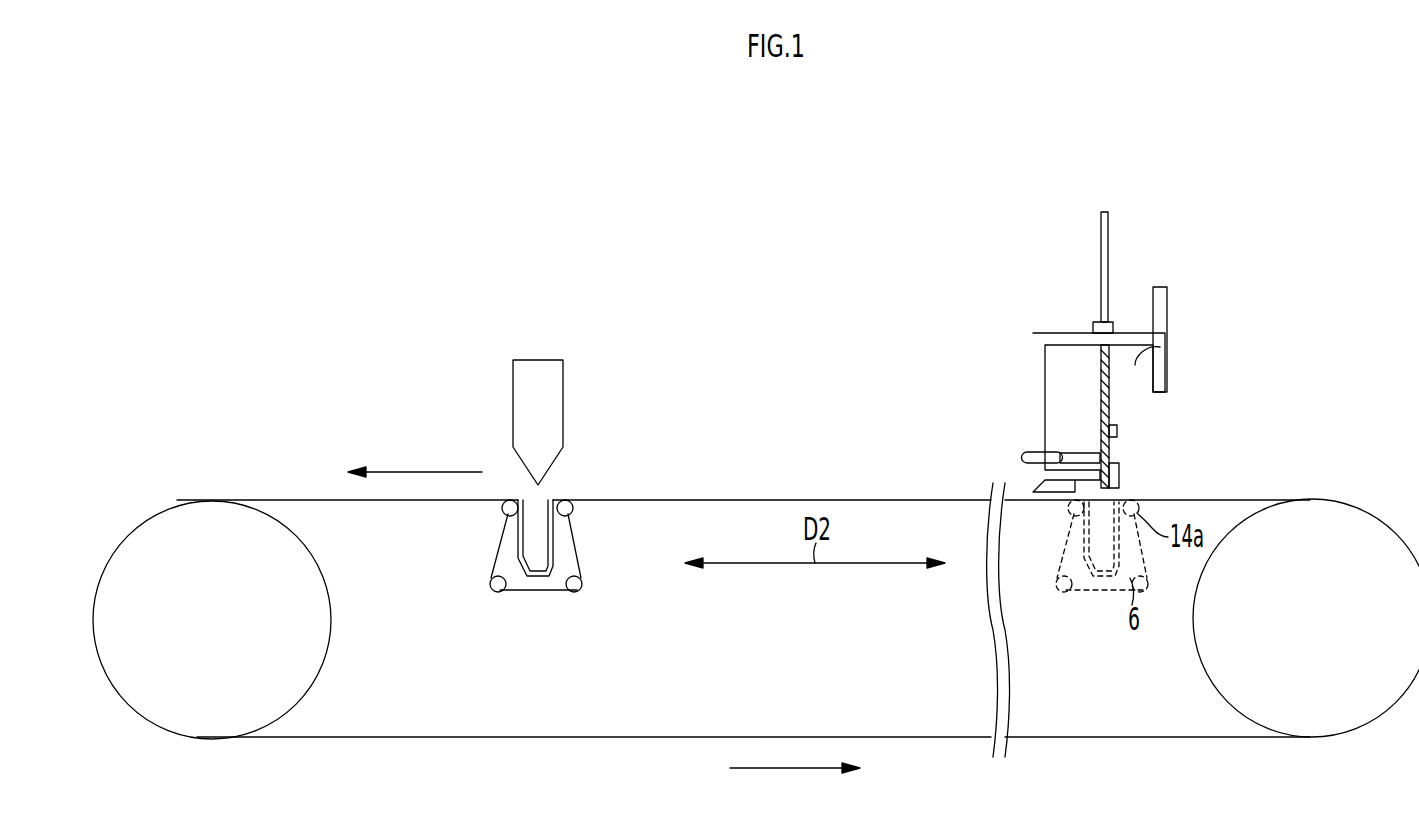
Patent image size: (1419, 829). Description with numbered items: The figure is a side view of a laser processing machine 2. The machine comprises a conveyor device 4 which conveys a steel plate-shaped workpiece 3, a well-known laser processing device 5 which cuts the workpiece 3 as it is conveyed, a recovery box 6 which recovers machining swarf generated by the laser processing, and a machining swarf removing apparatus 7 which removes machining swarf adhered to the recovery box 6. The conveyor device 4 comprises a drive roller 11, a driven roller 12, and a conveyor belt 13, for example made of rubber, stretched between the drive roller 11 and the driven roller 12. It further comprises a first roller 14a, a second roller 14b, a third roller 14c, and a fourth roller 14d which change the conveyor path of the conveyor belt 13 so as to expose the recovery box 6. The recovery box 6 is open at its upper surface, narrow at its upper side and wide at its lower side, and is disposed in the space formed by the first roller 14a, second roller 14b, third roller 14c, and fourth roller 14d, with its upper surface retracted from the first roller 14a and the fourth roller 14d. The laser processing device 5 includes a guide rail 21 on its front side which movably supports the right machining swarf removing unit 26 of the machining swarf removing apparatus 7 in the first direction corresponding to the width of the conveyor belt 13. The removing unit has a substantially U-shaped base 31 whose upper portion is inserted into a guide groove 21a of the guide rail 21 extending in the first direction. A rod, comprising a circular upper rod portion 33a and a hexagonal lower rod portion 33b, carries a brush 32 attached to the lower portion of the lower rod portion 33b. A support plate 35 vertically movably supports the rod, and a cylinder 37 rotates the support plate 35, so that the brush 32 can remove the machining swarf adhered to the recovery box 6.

The laser processing machine 2 is at (290, 250).
The workpiece 3 is at (594, 500).
The conveyor device 4 is at (113, 524).
The laser processing device 5 is at (540, 360).
The recovery box 6 is at (538, 569).
The machining swarf removing apparatus 7 is at (1019, 274).
The drive roller 11 is at (182, 535).
The driven roller 12 is at (1355, 545).
The conveyor belt 13 is at (313, 500).
The first roller 14a is at (571, 513).
The second roller 14b is at (582, 583).
The third roller 14c is at (491, 583).
The fourth roller 14d is at (504, 513).
The guide rail 21 is at (1160, 290).
The guide groove 21a is at (1141, 369).
The right machining swarf removing unit 26 is at (1023, 356).
The base 31 is at (1115, 333).
The brush 32 is at (1117, 430).
The upper rod portion 33a is at (1101, 260).
The lower rod portion 33b is at (1109, 412).
The support plate 35 is at (1117, 470).
The cylinder 37 is at (1025, 455).